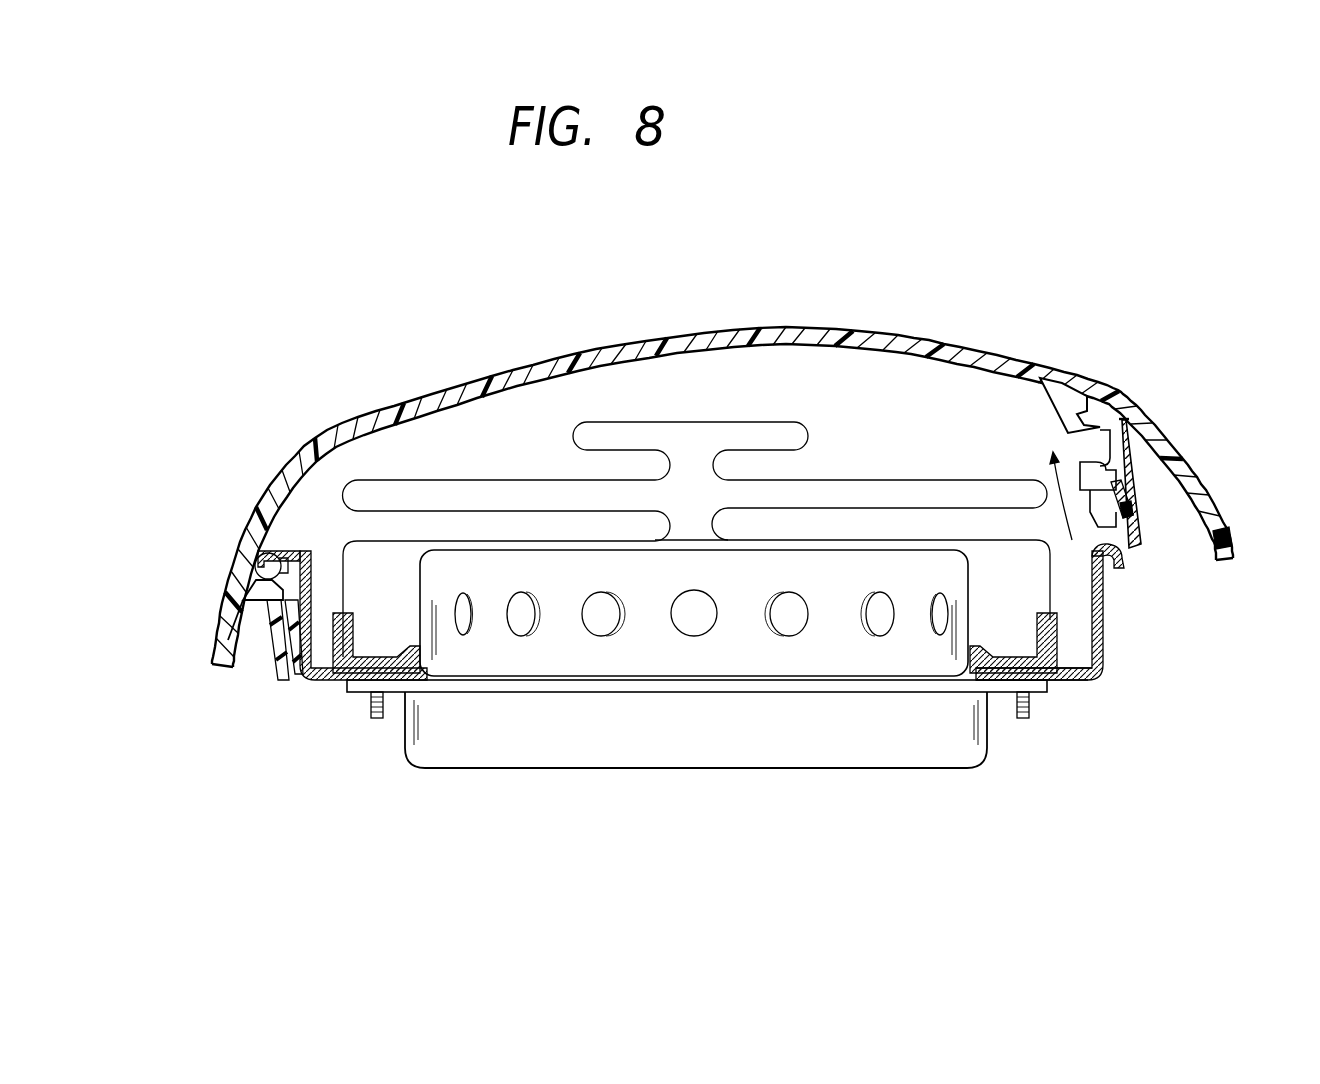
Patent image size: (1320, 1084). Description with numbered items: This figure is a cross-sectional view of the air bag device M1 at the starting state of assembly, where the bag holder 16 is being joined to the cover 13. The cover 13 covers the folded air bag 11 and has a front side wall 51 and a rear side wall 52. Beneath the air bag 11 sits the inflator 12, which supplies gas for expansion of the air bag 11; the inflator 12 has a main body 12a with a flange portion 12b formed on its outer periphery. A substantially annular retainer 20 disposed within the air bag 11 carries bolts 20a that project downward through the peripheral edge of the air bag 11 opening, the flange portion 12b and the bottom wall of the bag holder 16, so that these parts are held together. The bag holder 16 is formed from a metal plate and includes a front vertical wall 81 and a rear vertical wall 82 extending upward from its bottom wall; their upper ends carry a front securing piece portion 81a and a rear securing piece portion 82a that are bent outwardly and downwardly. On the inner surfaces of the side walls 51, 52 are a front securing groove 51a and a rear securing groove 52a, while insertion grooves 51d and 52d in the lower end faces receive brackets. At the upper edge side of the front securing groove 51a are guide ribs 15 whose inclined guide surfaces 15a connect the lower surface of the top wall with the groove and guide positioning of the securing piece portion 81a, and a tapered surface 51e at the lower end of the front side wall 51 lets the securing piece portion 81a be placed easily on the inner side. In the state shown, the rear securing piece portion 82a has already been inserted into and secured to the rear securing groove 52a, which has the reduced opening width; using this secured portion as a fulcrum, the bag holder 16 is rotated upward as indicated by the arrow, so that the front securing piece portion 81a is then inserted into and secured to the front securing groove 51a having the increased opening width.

The air bag device M1 is at (722, 419).
The cover 13 is at (767, 328).
The air bag 11 is at (780, 424).
The inflator 12 is at (696, 782).
The main body 12a is at (647, 767).
The flange portion 12b is at (746, 684).
The retainer 20 is at (372, 665).
The bolt 20a is at (377, 720).
The guide rib 15 is at (1059, 410).
The guide surface 15a is at (1058, 405).
The front side wall 51 is at (1178, 443).
The front securing groove 51a is at (1095, 437).
The insertion groove 51d is at (1122, 503).
The tapered surface 51e is at (1147, 533).
The rear side wall 52 is at (222, 630).
The rear securing groove 52a is at (256, 560).
The insertion groove 52d is at (283, 680).
The front vertical wall 81 is at (1101, 651).
The front securing piece portion 81a is at (1127, 557).
The rear vertical wall 82 is at (308, 558).
The rear securing piece portion 82a is at (274, 551).
The bag holder 16 is at (1073, 713).